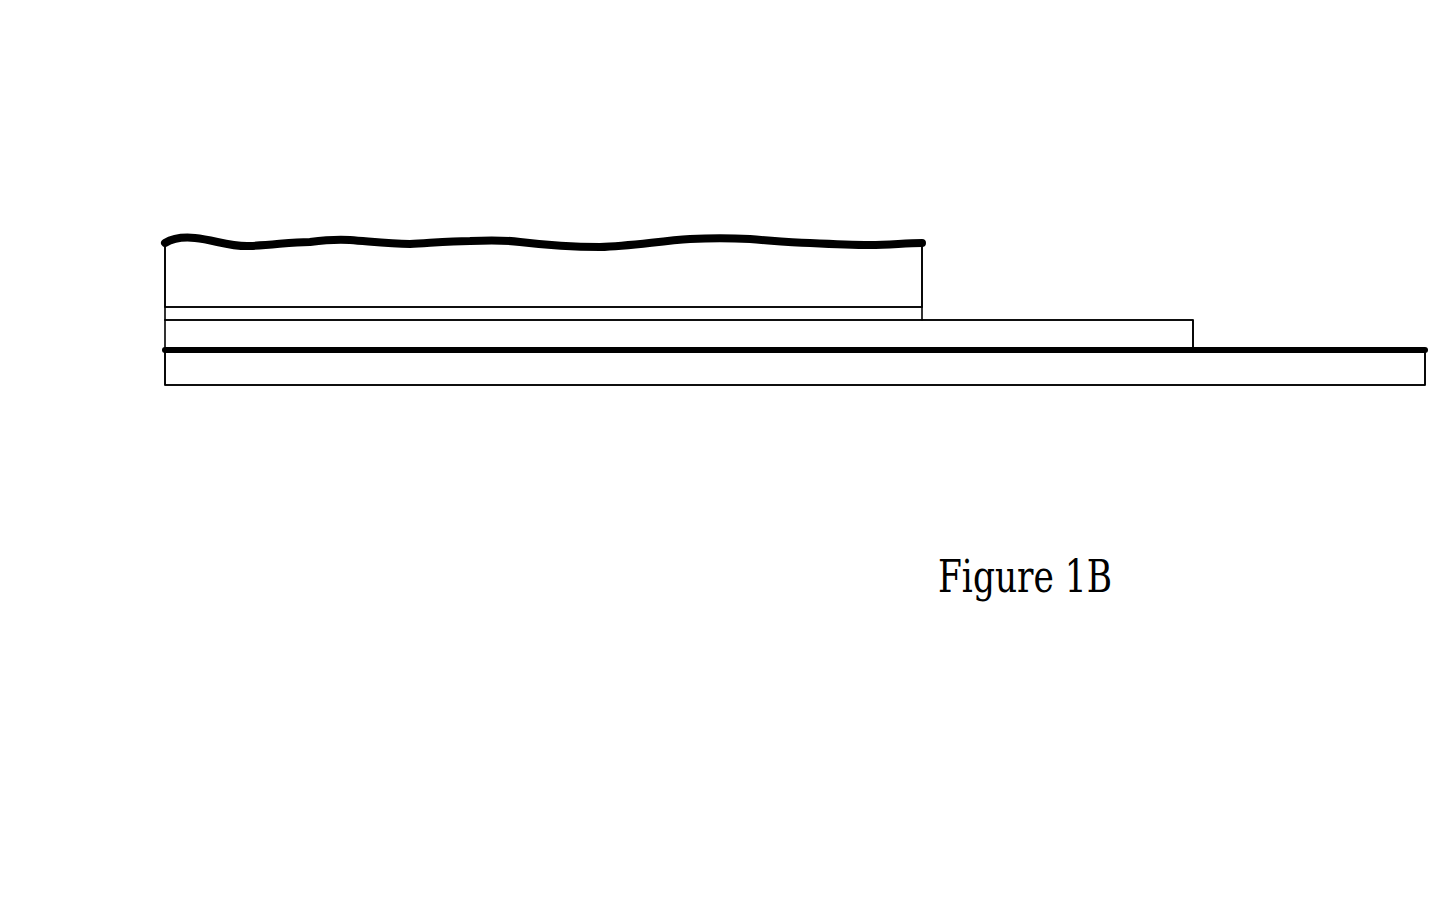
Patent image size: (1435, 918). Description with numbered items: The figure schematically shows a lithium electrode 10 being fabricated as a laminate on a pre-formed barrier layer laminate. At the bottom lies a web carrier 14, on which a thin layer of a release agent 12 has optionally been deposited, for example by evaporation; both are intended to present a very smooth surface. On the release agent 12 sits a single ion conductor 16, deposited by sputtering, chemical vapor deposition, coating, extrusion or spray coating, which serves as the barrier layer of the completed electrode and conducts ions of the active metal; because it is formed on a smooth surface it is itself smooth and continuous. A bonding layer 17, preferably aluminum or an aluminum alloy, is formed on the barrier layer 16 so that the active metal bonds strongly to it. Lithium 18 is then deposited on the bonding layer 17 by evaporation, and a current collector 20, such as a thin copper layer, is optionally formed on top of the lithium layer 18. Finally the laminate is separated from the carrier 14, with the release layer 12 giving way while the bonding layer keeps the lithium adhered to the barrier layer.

The lithium electrode 10 is at (918, 111).
The release agent 12 is at (1263, 347).
The web carrier 14 is at (1250, 373).
The single ion conductor 16 is at (1098, 328).
The bonding layer 17 is at (168, 313).
The lithium layer 18 is at (915, 282).
The current collector 20 is at (897, 238).